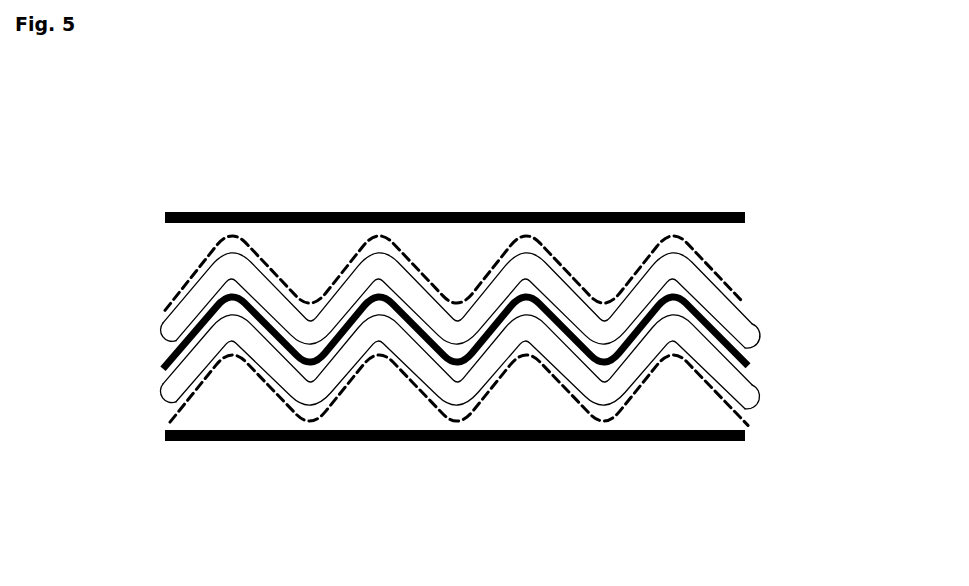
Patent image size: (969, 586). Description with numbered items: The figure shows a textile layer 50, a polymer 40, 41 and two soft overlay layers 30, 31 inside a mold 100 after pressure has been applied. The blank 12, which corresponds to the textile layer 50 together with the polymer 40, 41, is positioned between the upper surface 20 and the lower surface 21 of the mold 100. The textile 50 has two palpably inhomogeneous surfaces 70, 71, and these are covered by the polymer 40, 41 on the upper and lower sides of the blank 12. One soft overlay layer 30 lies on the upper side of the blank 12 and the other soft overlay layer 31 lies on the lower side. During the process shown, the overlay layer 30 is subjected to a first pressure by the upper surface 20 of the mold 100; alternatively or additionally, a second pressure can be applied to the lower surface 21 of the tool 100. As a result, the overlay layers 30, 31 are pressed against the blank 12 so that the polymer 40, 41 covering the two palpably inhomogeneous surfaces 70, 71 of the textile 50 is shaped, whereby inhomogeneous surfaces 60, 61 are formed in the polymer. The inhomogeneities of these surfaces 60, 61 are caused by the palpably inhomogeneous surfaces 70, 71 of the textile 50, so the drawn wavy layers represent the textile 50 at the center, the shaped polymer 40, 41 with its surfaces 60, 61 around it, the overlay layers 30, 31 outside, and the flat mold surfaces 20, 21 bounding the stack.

The mold 100 is at (544, 178).
The upper surface 20 is at (688, 213).
The lower surface 21 is at (165, 440).
The blank 12 is at (145, 256).
The soft overlay layer 30 is at (742, 306).
The soft overlay layer 31 is at (720, 400).
The inhomogeneous surface 60 is at (242, 257).
The inhomogeneous surface 61 is at (318, 405).
The palpably inhomogeneous surface 70 is at (288, 348).
The palpably inhomogeneous surface 71 is at (440, 360).
The polymer 40 is at (760, 347).
The polymer 41 is at (757, 407).
The textile layer 50 is at (750, 370).